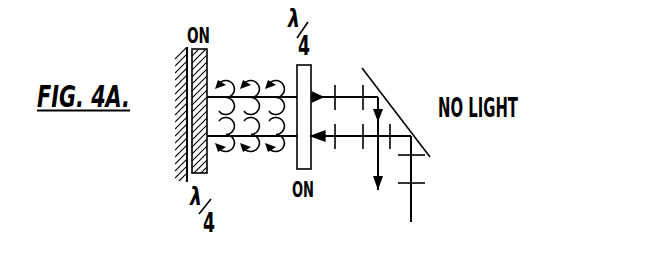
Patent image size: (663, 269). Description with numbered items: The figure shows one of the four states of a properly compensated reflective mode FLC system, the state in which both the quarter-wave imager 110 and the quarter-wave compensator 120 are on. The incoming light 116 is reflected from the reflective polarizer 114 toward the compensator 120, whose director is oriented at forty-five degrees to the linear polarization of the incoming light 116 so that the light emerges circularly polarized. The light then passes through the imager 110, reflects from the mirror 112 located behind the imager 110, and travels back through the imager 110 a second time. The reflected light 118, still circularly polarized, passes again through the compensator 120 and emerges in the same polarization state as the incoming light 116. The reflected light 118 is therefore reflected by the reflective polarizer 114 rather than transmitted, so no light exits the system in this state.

The λ/4 FLC imager 110 is at (209, 70).
The mirror 112 is at (184, 50).
The reflective polarizer 114 is at (372, 82).
The incoming light 116 is at (412, 206).
The reflected light 118 is at (373, 168).
The λ/4 compensator 120 is at (312, 72).